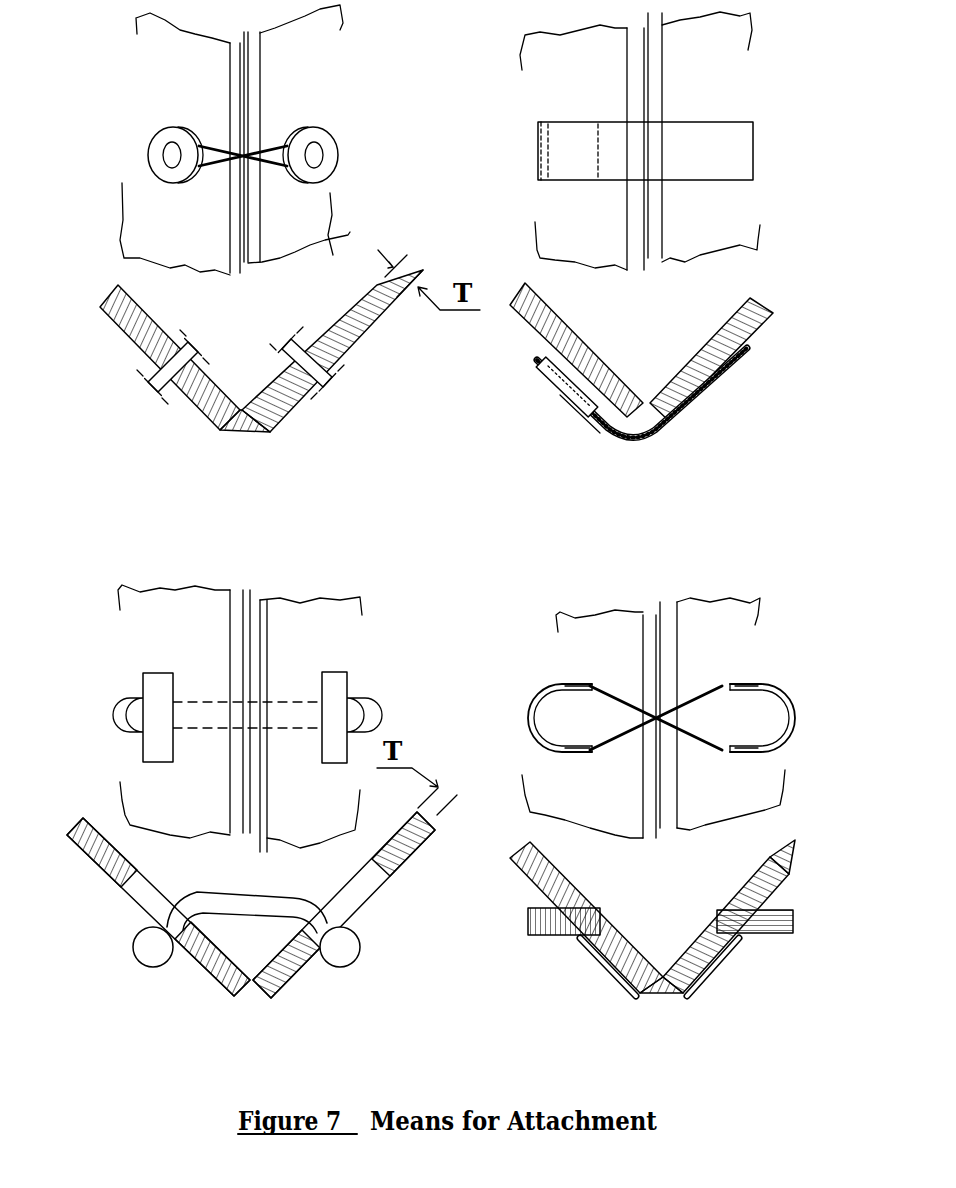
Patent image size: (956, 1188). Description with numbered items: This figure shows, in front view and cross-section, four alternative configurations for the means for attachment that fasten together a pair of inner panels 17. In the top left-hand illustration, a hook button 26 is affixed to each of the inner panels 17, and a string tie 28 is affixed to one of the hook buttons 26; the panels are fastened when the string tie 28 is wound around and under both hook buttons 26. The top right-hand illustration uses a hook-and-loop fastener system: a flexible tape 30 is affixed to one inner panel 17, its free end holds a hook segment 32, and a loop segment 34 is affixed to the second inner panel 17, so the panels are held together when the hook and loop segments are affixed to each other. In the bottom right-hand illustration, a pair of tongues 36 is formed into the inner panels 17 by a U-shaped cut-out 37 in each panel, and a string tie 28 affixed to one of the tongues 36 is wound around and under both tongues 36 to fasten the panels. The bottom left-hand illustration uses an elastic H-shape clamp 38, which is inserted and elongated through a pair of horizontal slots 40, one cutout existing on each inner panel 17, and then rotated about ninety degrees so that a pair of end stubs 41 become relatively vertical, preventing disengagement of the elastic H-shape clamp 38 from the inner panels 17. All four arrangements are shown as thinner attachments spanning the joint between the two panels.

The inner panel 17 is at (187, 87).
The hook button 26 is at (162, 145).
The string tie 28 is at (273, 143).
The flexible tape 30 is at (682, 147).
The hook segment 32 is at (570, 387).
The loop segment 34 is at (563, 362).
The tongue 36 is at (568, 722).
The U-shaped cut-out 37 is at (567, 685).
The elastic H-shape clamp 38 is at (387, 612).
The horizontal slot 40 is at (135, 713).
The end stub 41 is at (333, 685).